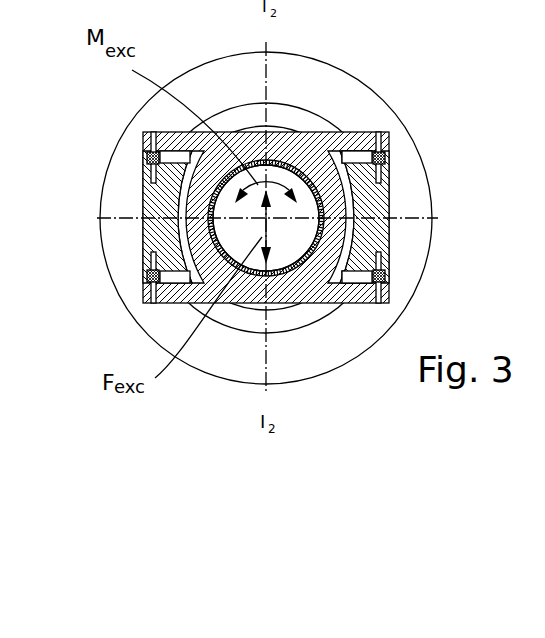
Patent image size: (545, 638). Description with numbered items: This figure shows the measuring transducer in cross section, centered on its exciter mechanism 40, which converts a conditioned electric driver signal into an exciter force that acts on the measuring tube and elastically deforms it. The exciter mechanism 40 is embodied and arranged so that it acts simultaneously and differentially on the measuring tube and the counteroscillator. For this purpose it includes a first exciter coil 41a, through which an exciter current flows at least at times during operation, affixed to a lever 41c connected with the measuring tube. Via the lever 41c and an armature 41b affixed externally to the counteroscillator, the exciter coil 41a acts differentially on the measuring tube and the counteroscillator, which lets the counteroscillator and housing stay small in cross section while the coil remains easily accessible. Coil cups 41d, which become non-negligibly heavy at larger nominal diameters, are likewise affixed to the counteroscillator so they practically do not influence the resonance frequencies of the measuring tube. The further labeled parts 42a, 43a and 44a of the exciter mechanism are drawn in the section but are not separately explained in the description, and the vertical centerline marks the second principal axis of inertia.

The exciter mechanism 40 is at (422, 92).
The first exciter coil 41a is at (382, 153).
The armature 41b is at (388, 173).
The lever 41c is at (358, 131).
The coil cups 41d is at (384, 162).
The lower left fastening bolt 42a is at (146, 273).
The upper left fastening bolt 43a is at (146, 160).
The lower right fastening bolt 44a is at (388, 274).